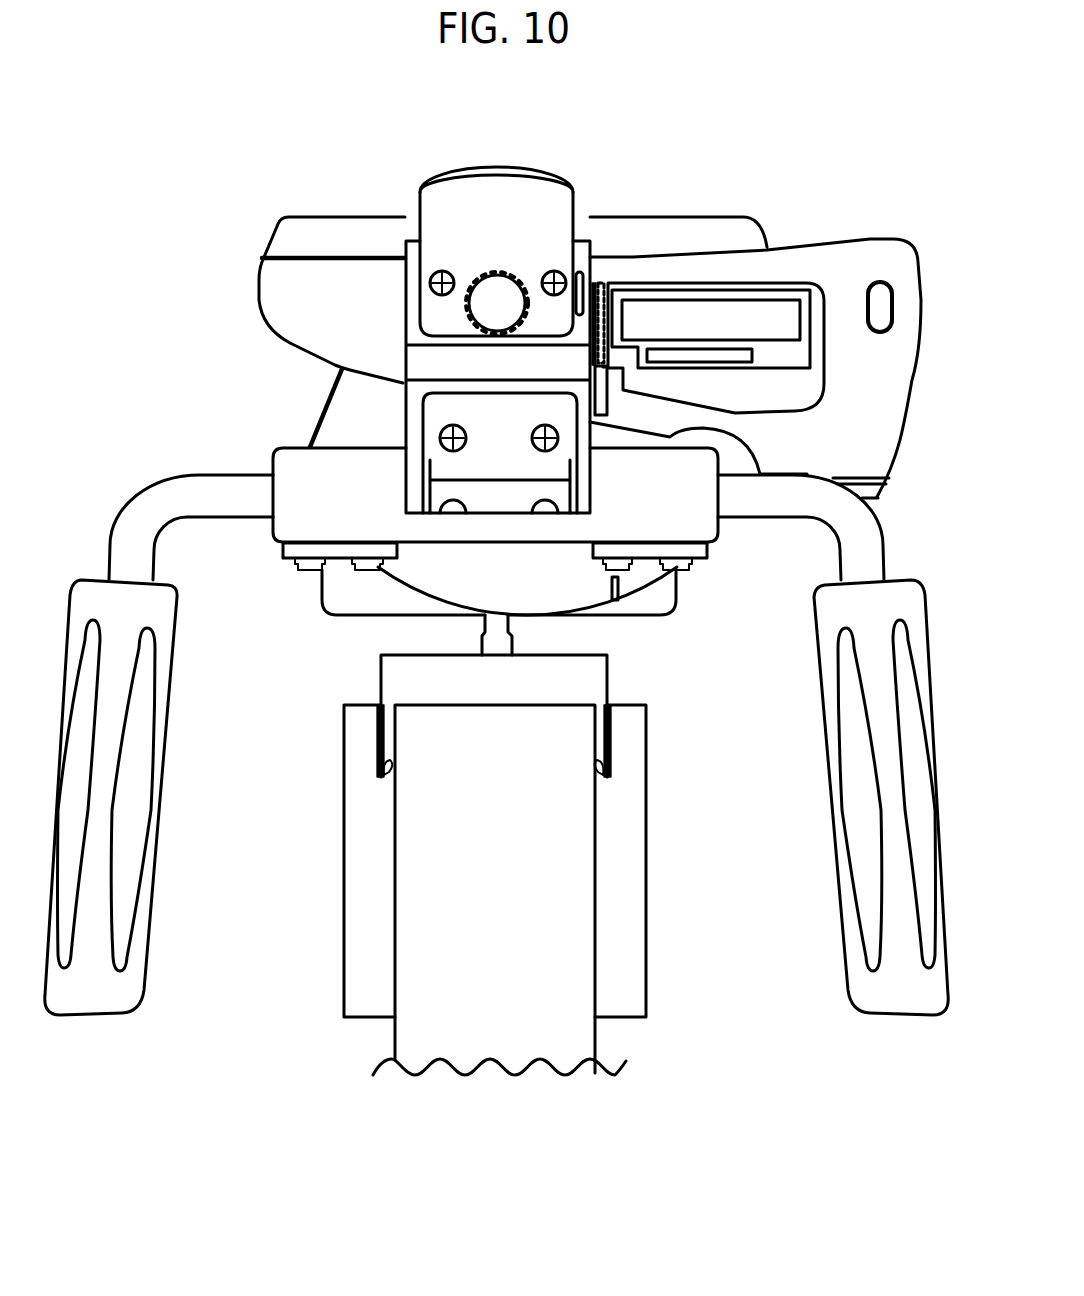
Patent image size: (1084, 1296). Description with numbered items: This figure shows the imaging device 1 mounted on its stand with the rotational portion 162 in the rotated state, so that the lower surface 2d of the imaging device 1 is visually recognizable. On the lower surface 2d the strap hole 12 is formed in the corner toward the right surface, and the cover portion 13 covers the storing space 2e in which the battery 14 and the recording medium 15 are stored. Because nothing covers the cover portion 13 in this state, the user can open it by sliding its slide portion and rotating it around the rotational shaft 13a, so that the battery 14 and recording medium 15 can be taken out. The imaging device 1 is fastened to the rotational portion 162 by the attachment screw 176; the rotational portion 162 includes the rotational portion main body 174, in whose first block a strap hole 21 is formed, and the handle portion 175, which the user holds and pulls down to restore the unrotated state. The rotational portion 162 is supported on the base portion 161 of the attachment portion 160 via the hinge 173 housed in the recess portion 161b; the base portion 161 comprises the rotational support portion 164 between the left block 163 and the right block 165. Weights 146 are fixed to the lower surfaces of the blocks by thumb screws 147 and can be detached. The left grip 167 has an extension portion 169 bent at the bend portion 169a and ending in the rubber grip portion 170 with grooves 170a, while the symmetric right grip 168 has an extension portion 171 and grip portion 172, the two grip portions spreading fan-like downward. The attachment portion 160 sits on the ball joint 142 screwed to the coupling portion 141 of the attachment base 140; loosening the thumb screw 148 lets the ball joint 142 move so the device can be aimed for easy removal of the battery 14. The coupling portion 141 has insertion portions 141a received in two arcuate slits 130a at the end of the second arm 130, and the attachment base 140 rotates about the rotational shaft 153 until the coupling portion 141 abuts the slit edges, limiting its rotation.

The imaging device 1 is at (200, 185).
The lower surface 2d is at (306, 304).
The storing space 2e is at (810, 361).
The strap hole 12 is at (888, 289).
The cover portion 13 is at (613, 300).
The rotational shaft 13a is at (610, 297).
The battery 14 is at (762, 300).
The recording medium 15 is at (733, 363).
The strap hole 21 is at (583, 262).
The attachment base 140 is at (160, 388).
The coupling portion 141 is at (381, 693).
The insertion portions 141a is at (377, 737).
The ball joint 142 is at (412, 598).
The weights 146 is at (284, 550).
The thumb screws 147 is at (360, 572).
The thumb screw 148 is at (620, 592).
The rotational shaft 153 is at (344, 945).
The second arm 130 is at (391, 1009).
The slits 130a is at (383, 773).
The attachment portion 160 is at (724, 501).
The base portion 161 is at (268, 462).
The recess portion 161b is at (582, 497).
The rotational portion 162 is at (405, 297).
The left block 163 is at (336, 488).
The rotational support portion 164 is at (476, 536).
The right block 165 is at (663, 503).
The left grip 167 is at (161, 472).
The right grip 168 is at (888, 530).
The extension portion 169 is at (111, 532).
The bend portion 169a is at (136, 494).
The grip portion 170 is at (153, 920).
The grooves 170a is at (127, 967).
The extension portion 171 is at (886, 562).
The grip portion 172 is at (842, 924).
The hinge 173 is at (420, 422).
The rotational portion main body 174 is at (605, 283).
The handle portion 175 is at (577, 212).
The attachment screw 176 is at (476, 276).